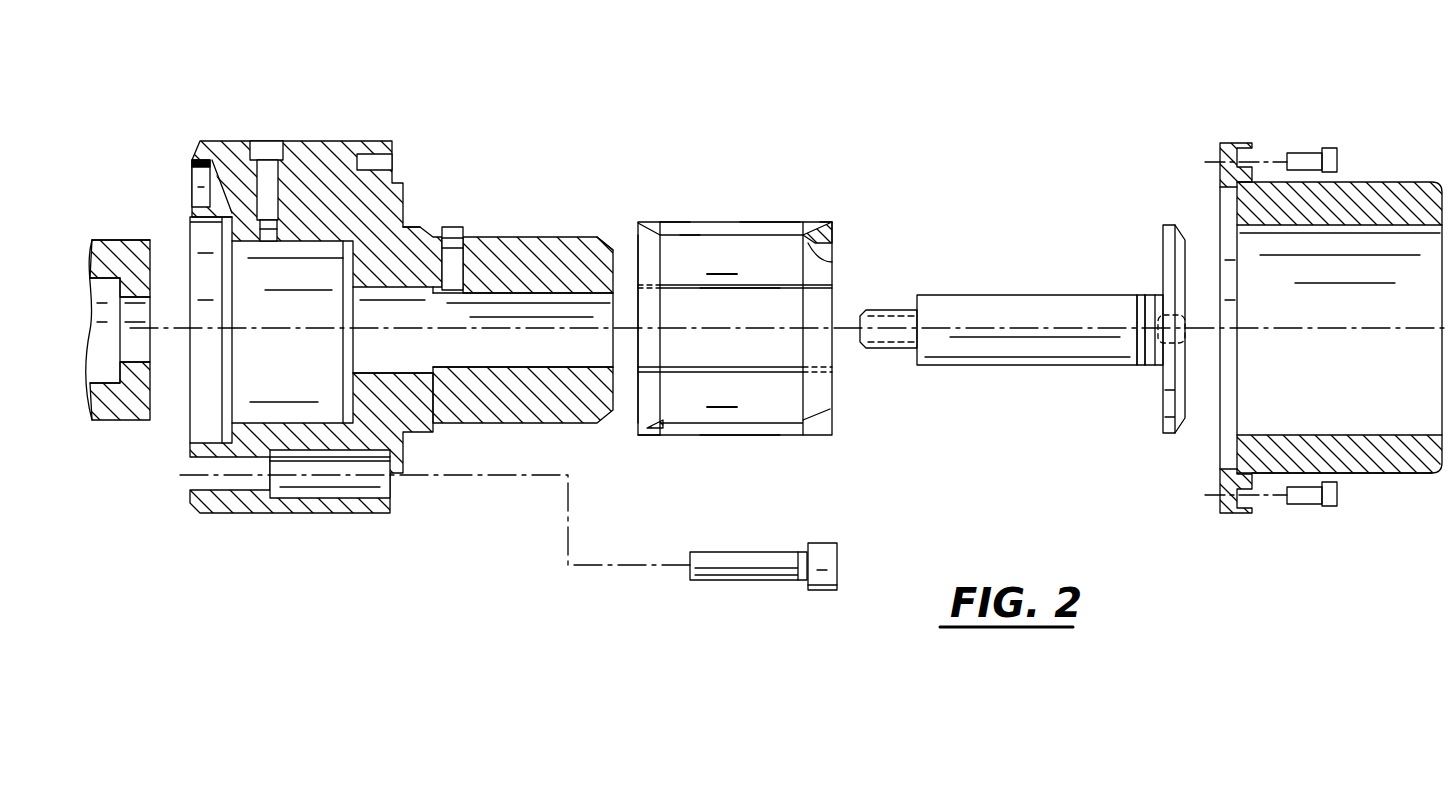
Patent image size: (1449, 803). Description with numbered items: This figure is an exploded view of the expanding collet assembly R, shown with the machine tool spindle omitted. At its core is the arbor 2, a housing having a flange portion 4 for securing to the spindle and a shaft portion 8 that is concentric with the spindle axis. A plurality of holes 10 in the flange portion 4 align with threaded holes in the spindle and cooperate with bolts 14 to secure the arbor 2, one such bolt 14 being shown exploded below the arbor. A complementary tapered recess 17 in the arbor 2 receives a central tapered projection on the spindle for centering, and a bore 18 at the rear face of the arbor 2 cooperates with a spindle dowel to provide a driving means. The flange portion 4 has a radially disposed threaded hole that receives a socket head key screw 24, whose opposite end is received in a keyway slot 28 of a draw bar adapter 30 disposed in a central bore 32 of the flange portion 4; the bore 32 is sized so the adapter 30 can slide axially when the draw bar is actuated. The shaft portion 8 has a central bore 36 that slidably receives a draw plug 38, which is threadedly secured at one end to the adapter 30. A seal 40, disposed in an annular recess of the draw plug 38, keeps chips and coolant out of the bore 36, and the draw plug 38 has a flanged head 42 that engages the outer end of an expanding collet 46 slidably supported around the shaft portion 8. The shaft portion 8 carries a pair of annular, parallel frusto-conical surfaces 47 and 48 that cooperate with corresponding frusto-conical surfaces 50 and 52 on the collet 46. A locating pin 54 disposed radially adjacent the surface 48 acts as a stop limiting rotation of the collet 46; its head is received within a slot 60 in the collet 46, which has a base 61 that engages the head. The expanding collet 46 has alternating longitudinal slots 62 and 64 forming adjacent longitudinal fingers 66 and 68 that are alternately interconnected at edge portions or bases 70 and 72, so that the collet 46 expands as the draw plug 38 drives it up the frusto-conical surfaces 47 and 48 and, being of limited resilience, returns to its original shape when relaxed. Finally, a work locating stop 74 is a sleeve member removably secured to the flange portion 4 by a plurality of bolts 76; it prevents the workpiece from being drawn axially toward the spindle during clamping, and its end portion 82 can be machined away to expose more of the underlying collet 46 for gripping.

The arbor 2 is at (322, 135).
The flange portion 4 is at (362, 153).
The shaft portion 8 is at (492, 243).
The holes 10 is at (358, 492).
The bolts 14 is at (757, 577).
The tapered recess 17 is at (198, 427).
The bore 18 is at (188, 165).
The socket head key screw 24 is at (270, 150).
The keyway slot 28 is at (138, 243).
The draw bar adapter 30 is at (108, 243).
The central bore 32 is at (318, 403).
The central bore 36 is at (547, 359).
The draw plug 38 is at (991, 300).
The seal 40 is at (1140, 365).
The flanged head 42 is at (1170, 225).
The expanding collet 46 is at (718, 218).
The frusto-conical surface 47 is at (596, 238).
The frusto-conical surface 48 is at (425, 227).
The frusto-conical surface 50 is at (834, 262).
The frusto-conical surface 52 is at (638, 235).
The locating pin 54 is at (448, 227).
The slot 60 is at (663, 222).
The base 61 is at (688, 233).
The longitudinal slots 62 is at (764, 222).
The longitudinal slots 64 is at (772, 288).
The longitudinal fingers 66 is at (722, 260).
The longitudinal fingers 68 is at (722, 393).
The edge portion 70 is at (832, 230).
The edge portion 72 is at (658, 428).
The work locating stop 74 is at (1360, 182).
The bolts 76 is at (1322, 148).
The end portion 82 is at (1430, 473).
The expanding collet assembly R is at (918, 78).